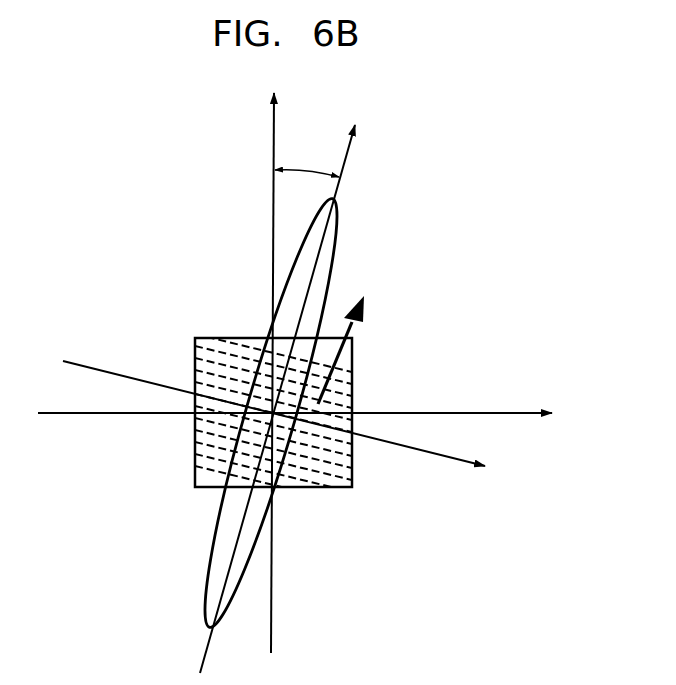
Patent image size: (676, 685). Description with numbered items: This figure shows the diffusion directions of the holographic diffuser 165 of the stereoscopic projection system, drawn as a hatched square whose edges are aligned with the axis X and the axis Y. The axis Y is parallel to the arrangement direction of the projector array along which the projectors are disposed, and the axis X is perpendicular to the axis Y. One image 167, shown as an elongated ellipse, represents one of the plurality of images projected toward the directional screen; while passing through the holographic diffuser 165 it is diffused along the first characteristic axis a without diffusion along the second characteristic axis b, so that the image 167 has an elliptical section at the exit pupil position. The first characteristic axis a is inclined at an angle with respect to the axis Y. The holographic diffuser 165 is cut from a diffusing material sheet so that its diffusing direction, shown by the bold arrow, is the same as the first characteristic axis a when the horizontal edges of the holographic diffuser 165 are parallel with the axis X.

The holographic diffuser 165 is at (238, 338).
The image 167 is at (334, 283).
The axis X is at (308, 413).
The axis Y is at (272, 358).
The first characteristic axis a is at (282, 385).
The second characteristic axis b is at (283, 422).